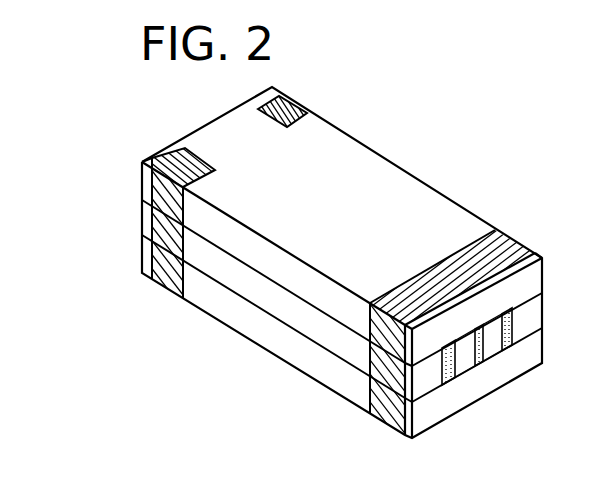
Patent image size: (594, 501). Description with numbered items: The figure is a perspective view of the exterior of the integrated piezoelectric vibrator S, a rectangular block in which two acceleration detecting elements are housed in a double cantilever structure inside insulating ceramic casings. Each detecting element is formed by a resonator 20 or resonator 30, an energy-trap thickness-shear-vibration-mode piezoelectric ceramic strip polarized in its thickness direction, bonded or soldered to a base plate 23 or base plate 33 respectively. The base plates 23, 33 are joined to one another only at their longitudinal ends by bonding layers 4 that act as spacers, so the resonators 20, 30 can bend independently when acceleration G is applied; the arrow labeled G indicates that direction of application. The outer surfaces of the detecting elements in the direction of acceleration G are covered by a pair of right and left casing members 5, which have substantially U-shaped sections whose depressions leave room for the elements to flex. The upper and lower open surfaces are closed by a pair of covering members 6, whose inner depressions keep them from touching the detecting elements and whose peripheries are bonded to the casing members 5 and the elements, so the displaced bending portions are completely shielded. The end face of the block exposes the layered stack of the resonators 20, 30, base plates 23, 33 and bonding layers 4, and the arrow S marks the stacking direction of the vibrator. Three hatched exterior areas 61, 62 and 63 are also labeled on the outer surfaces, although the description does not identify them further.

The covering member 6 is at (402, 182).
The casing member 5 is at (543, 316).
The external electrode 61 is at (495, 243).
The external electrode 62 is at (292, 103).
The external electrode 63 is at (168, 162).
The resonator 20 is at (513, 333).
The base plate 23 is at (490, 350).
The resonator 30 is at (448, 385).
The base plate 33 is at (462, 367).
The bonding layer 4 is at (488, 378).
The piezoelectric vibrator S is at (390, 98).
The acceleration G is at (536, 106).